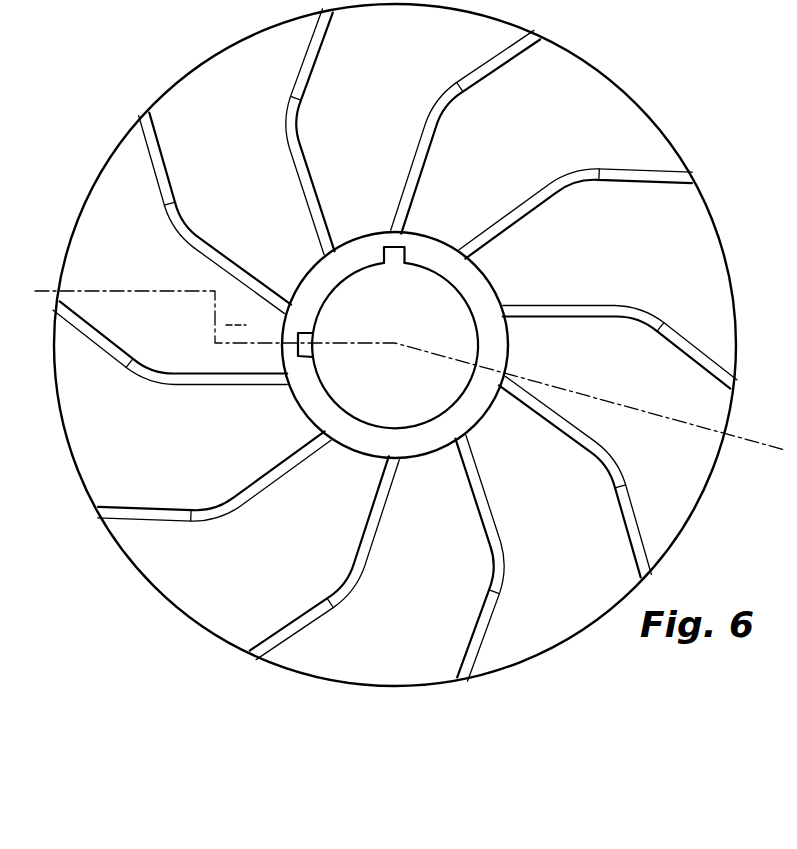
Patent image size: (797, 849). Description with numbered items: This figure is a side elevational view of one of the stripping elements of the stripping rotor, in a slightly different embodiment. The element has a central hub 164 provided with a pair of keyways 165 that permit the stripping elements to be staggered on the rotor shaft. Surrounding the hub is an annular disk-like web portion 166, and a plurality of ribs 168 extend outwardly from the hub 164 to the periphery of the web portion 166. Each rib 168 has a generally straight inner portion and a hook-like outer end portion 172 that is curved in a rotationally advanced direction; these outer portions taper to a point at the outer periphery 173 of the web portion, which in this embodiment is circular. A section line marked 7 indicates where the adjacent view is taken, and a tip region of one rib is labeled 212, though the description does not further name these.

The hub 164 is at (482, 288).
The keyways 165 is at (404, 258).
The annular disk-like web portion 166 is at (259, 52).
The ribs 168 is at (200, 240).
The hook-like outer end portions 172 is at (144, 102).
The outer periphery 173 is at (218, 50).
The vane tip portion 212 is at (626, 514).
The section line 7- 7 is at (38, 314).